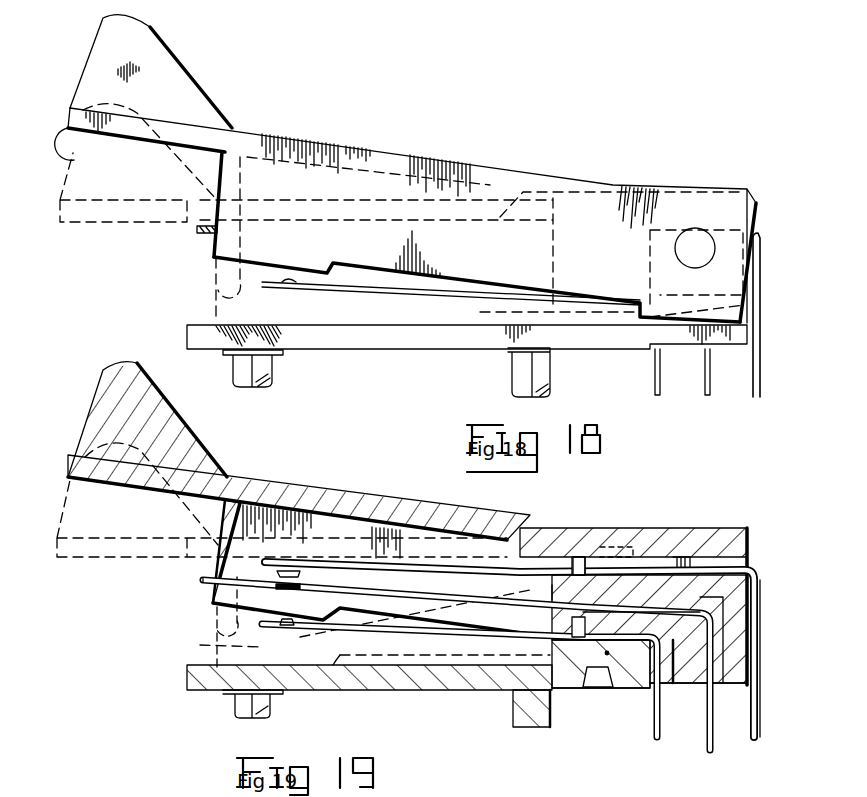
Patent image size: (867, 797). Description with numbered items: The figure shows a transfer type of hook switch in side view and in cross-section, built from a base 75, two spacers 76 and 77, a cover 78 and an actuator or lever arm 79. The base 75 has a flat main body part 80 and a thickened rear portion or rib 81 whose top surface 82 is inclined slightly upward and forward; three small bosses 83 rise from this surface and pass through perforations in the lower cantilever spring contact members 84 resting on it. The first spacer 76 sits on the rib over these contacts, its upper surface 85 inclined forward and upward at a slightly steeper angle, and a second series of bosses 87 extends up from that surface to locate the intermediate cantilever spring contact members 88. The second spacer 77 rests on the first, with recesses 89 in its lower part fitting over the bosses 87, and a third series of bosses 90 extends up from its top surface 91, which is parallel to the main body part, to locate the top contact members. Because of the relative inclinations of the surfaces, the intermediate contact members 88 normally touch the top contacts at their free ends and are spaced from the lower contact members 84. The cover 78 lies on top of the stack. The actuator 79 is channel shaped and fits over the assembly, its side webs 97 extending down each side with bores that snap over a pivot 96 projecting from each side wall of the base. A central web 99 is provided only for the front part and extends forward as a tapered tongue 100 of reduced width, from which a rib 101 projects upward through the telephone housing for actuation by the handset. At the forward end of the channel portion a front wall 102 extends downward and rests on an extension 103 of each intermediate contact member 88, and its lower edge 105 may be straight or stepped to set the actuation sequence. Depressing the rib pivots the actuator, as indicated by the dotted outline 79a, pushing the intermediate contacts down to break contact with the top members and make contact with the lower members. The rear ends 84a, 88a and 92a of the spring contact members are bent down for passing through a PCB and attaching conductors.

In FIG. 18, the base 75 is at (650, 352).
In FIG. 19, the base 75 is at (570, 680).
In FIG. 19, the first spacer 76 is at (676, 683).
In FIG. 19, the second spacer 77 is at (730, 682).
In FIG. 19, the cover 78 is at (676, 532).
In FIG. 19, the actuator or lever arm 79 is at (385, 510).
In FIG. 19, the dotted outline of actuator 79a is at (318, 553).
In FIG. 18, the flat main body part 80 is at (482, 350).
In FIG. 19, the flat main body part 80 is at (388, 680).
In FIG. 19, the thickened rear portion or rib 81 is at (607, 655).
In FIG. 19, the top surface of rib 82 is at (593, 668).
In FIG. 19, the bosses 83 is at (562, 683).
In FIG. 18, the lower cantilever spring contact members 84 is at (300, 292).
In FIG. 19, the lower cantilever spring contact members 84 is at (297, 628).
In FIG. 19, the rear ends of lower contact members 84a is at (657, 730).
In FIG. 19, the upper surface of first spacer 85 is at (680, 660).
In FIG. 19, the bosses 87 is at (552, 586).
In FIG. 19, the intermediate cantilever spring contact members 88 is at (320, 586).
In FIG. 19, the rear ends of intermediate contact members 88a is at (708, 745).
In FIG. 19, the recesses 89 is at (598, 575).
In FIG. 19, the bosses 90 is at (580, 557).
In FIG. 19, the top surface of second spacer 91 is at (645, 575).
In FIG. 19, the rear ends of top contact members 92a is at (760, 703).
In FIG. 18, the pivot 96 is at (708, 247).
In FIG. 18, the side webs 97 is at (530, 250).
In FIG. 18, the central web 99 is at (330, 150).
In FIG. 19, the central web 99 is at (263, 490).
In FIG. 18, the tongue 100 is at (140, 139).
In FIG. 18, the rib 101 is at (180, 82).
In FIG. 19, the rib 101 is at (160, 400).
In FIG. 18, the front wall 102 is at (197, 230).
In FIG. 19, the front wall 102 is at (228, 525).
In FIG. 19, the extension 103 is at (203, 580).
In FIG. 18, the lower edge of wall 105 is at (213, 297).
In FIG. 19, the lower edge of wall 105 is at (213, 575).